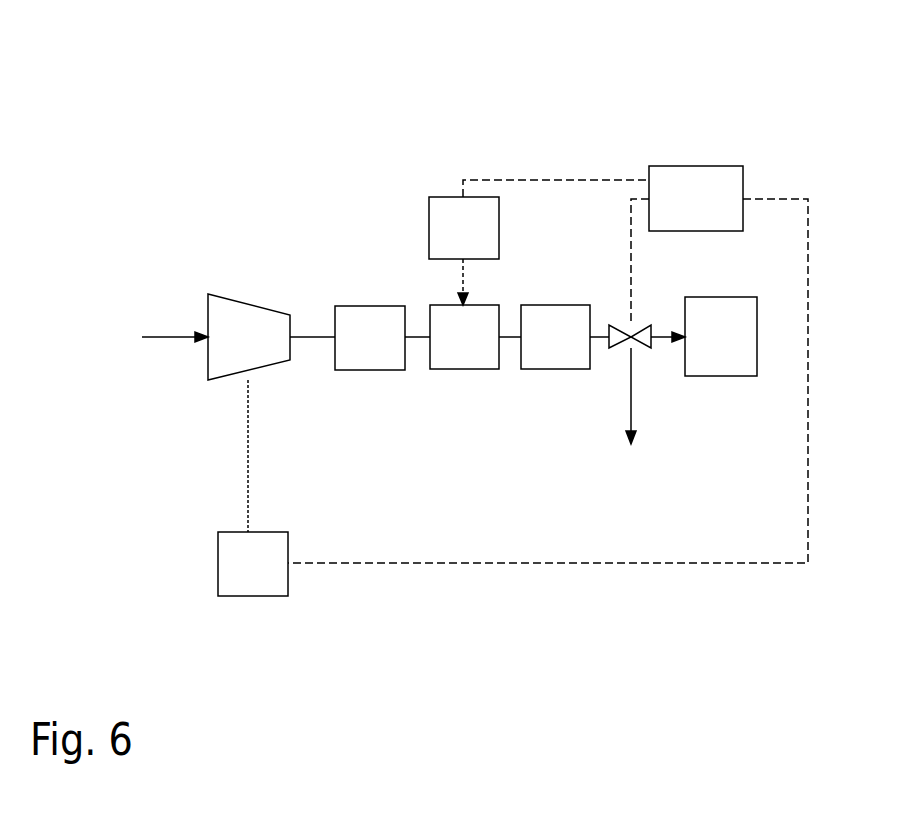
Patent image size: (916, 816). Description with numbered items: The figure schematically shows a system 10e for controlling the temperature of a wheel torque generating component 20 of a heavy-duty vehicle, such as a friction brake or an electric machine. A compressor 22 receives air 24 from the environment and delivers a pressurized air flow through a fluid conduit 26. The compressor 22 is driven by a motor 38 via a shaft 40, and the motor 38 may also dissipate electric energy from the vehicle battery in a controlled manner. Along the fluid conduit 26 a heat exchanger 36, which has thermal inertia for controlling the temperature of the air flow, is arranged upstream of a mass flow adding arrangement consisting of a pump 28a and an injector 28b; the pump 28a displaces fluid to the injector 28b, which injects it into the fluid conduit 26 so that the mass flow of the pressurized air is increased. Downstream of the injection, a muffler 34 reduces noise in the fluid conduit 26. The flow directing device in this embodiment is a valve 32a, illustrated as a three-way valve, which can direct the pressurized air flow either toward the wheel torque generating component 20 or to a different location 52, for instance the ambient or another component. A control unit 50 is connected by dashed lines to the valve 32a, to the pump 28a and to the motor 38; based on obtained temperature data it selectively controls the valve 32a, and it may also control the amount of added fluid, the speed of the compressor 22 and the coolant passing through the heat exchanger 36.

The system 10e is at (771, 79).
The wheel torque generating component 20 is at (757, 332).
The compressor 22 is at (218, 294).
The air 24 is at (150, 334).
The fluid conduit 26 is at (312, 336).
The pump 28a is at (440, 197).
The injector 28b is at (440, 303).
The valve 32a is at (643, 348).
The muffler 34 is at (548, 303).
The heat exchanger 36 is at (370, 305).
The motor 38 is at (218, 550).
The shaft 40 is at (248, 452).
The control unit 50 is at (672, 166).
The different location 52 is at (630, 421).